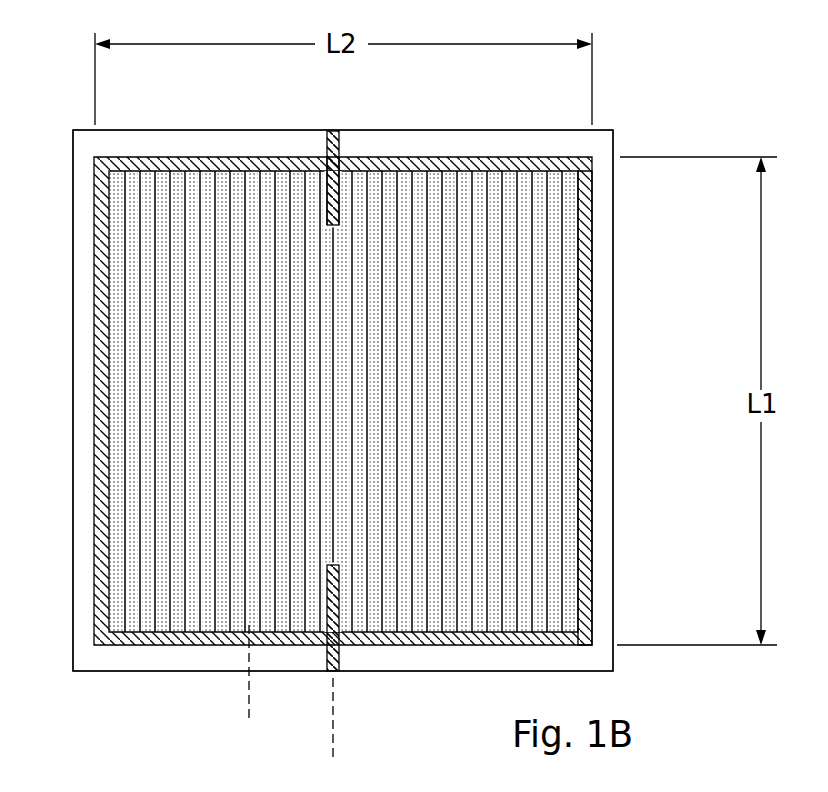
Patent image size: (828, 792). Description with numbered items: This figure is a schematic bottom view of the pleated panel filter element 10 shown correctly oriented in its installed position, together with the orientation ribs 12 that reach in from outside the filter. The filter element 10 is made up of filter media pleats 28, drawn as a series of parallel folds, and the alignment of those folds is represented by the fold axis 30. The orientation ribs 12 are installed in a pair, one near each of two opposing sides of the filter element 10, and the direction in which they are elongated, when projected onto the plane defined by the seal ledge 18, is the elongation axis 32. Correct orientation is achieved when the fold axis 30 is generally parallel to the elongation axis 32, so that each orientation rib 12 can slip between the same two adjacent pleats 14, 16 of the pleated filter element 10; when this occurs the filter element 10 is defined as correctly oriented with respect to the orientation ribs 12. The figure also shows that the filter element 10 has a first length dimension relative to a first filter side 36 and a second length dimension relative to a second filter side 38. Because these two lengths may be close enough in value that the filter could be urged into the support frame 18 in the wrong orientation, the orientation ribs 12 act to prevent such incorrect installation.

The pleated panel filter element 10 is at (652, 371).
The orientation ribs 12 is at (333, 129).
The adjacent pleat 14 is at (325, 170).
The adjacent pleat 16 is at (344, 176).
The seal ledge 18 is at (72, 213).
The filter media pleats 28 is at (150, 361).
The fold axis 30 is at (249, 688).
The elongation axis 32 is at (333, 713).
The first filter side 36 is at (592, 257).
The second filter side 38 is at (462, 157).